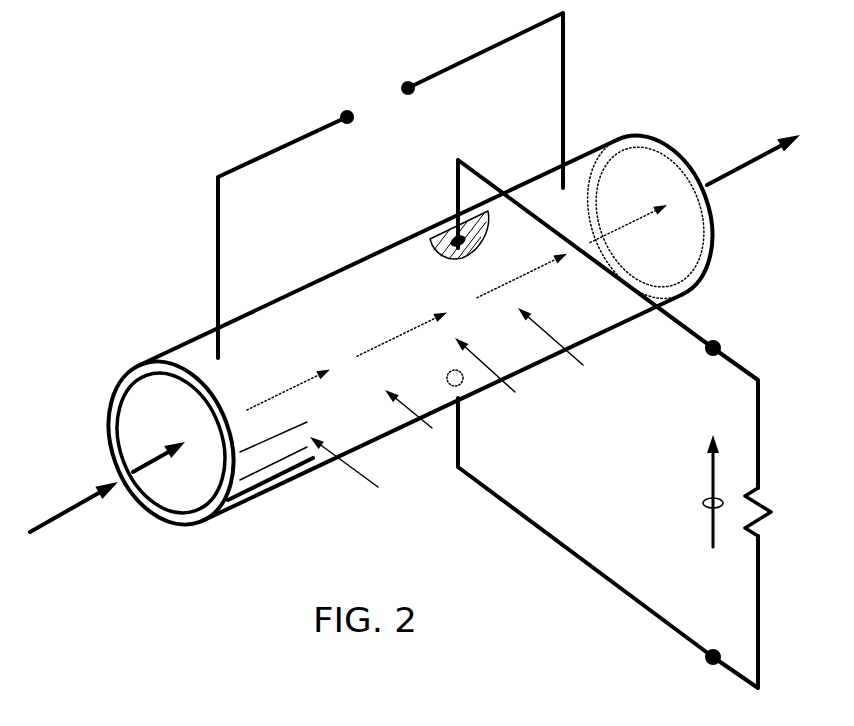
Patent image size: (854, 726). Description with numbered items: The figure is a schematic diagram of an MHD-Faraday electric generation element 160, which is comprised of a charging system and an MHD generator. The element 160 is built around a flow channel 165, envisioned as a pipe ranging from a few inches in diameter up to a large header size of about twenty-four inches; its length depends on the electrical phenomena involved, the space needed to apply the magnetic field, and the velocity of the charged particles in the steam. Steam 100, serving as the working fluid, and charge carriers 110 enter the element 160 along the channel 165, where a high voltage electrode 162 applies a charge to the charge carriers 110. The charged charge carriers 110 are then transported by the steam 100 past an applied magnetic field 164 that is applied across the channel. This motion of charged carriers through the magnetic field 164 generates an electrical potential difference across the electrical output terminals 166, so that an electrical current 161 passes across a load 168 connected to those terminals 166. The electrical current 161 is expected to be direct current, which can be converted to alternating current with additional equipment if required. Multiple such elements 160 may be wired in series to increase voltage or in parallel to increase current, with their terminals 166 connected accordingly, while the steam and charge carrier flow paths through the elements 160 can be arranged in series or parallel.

The steam 100 is at (417, 297).
The charge carriers 110 is at (70, 503).
The MHD-Faraday electric generation element 160 is at (611, 122).
The electrical current 161 is at (705, 500).
The high voltage electrode 162 is at (348, 112).
The applied magnetic field 164 is at (461, 410).
The flow channel 165 is at (307, 477).
The electrical output terminals 166 is at (457, 250).
The load 168 is at (774, 515).